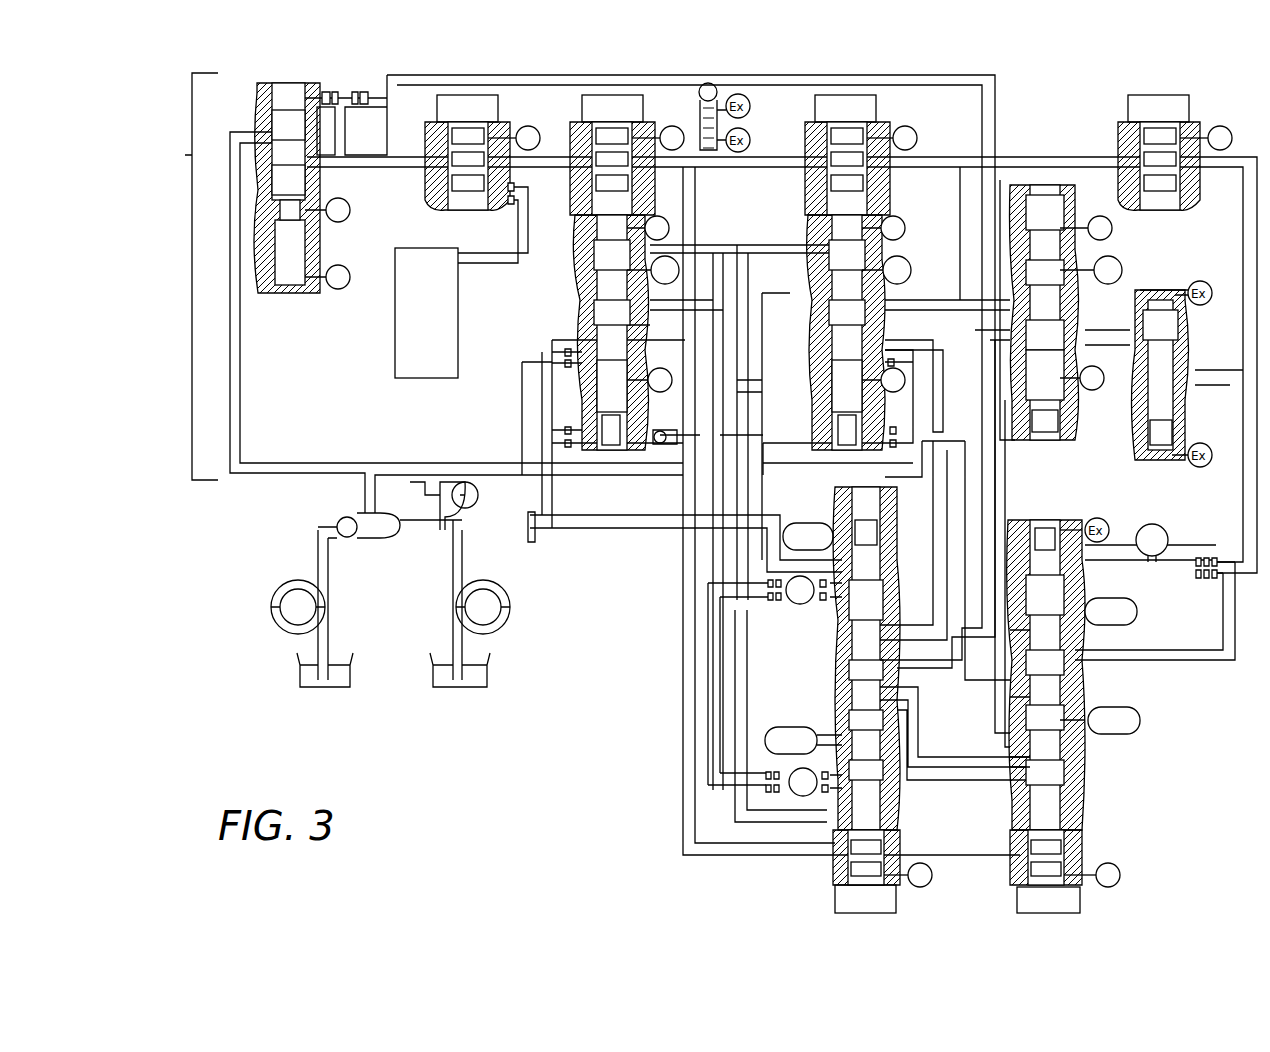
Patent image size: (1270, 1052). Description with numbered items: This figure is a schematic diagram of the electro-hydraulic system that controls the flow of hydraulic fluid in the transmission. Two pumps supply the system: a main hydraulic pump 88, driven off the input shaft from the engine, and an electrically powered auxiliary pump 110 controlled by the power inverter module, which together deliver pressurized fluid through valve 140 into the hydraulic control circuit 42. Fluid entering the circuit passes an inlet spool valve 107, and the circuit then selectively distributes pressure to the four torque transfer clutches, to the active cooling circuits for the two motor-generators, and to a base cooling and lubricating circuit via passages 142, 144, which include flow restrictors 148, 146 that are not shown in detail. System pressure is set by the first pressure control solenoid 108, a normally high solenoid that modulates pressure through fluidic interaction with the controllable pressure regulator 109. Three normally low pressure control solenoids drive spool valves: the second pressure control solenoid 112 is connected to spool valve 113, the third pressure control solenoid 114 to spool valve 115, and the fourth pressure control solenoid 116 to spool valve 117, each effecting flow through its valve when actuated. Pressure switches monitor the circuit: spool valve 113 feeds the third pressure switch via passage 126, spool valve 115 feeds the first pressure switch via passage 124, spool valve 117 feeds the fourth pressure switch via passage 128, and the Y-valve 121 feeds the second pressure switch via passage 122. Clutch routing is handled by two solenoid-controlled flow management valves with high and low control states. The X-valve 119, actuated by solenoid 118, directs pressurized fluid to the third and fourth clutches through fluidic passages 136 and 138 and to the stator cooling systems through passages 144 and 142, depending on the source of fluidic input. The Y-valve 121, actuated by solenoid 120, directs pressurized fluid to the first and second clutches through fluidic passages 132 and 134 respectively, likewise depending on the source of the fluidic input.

The hydraulic control circuit 42 is at (185, 155).
The main hydraulic pump 88 is at (490, 625).
The inlet spool valve 107 is at (285, 275).
The pressure control solenoid PCS1 108 is at (448, 95).
The controllable pressure regulator 109 is at (452, 300).
The auxiliary pump 110 is at (290, 625).
The pressure control solenoid PCS2 112 is at (1135, 95).
The spool valve 113 is at (1045, 305).
The pressure control solenoid PCS3 114 is at (828, 95).
The spool valve 115 is at (832, 212).
The pressure control solenoid PCS4 116 is at (595, 95).
The spool valve 117 is at (612, 245).
The solenoid 118 is at (850, 900).
The X-valve 119 is at (852, 665).
The solenoid 120 is at (1025, 905).
The Y-valve 121 is at (1055, 768).
The passage 122 is at (1160, 526).
The passage 124 is at (905, 258).
The passage 126 is at (1115, 258).
The passage 128 is at (672, 258).
The fluidic passage 132 is at (1140, 720).
The fluidic passage 134 is at (1137, 612).
The fluidic passage 136 is at (790, 726).
The fluidic passage 138 is at (803, 522).
The valve 140 is at (343, 520).
The passage 142 is at (800, 797).
The passage 144 is at (797, 604).
The flow restrictor 146 is at (770, 602).
The flow restrictor 148 is at (768, 800).